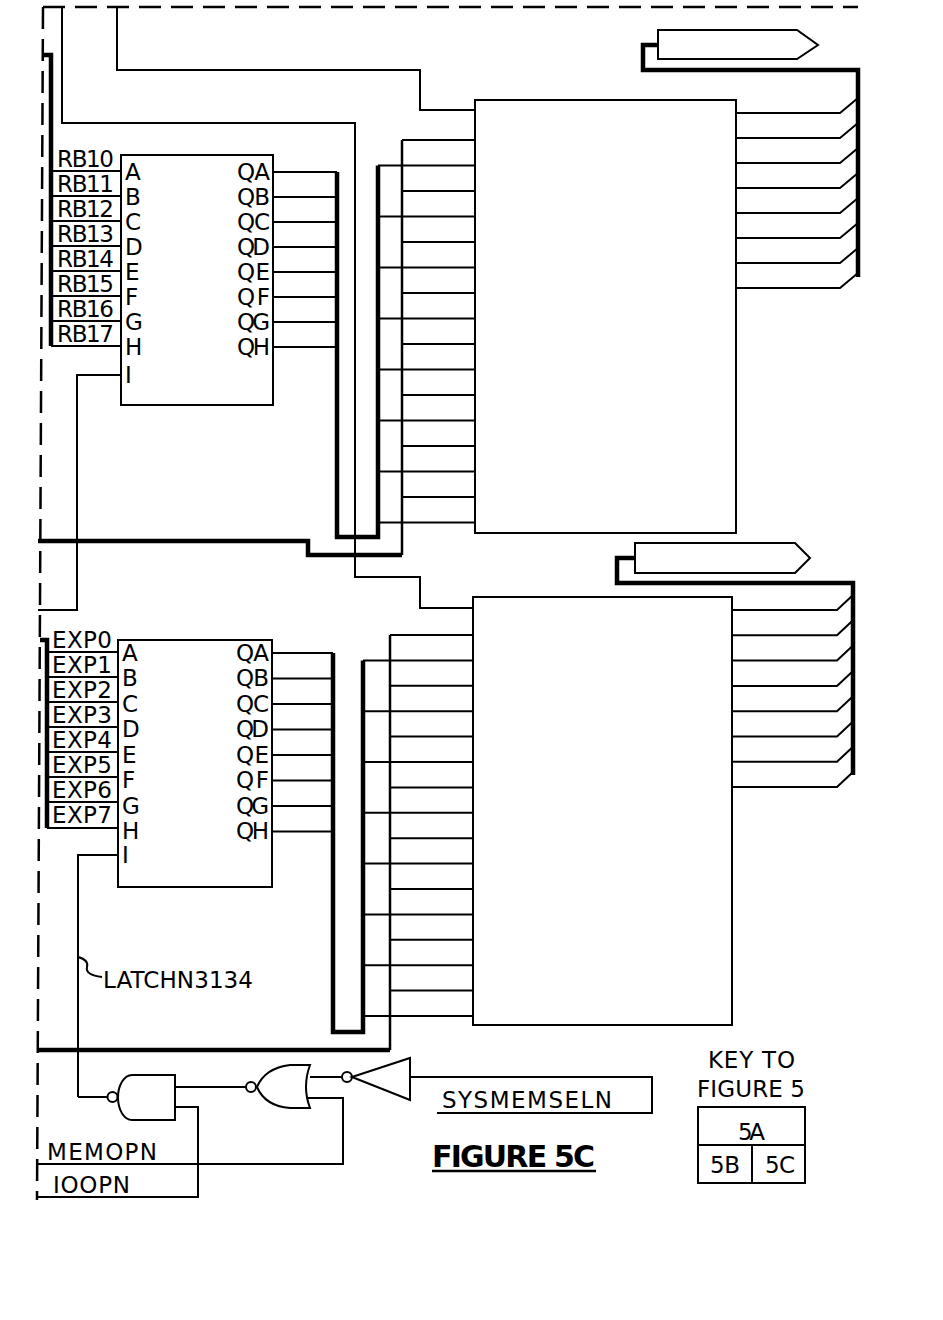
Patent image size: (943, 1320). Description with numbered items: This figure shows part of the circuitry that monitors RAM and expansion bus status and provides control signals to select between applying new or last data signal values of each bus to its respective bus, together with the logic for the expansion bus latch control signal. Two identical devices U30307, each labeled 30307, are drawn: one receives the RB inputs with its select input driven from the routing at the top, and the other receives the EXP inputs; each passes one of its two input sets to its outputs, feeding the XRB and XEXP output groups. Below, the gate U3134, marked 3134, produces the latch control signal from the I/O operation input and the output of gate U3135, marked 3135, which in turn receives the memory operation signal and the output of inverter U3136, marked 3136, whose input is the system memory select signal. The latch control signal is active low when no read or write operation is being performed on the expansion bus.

The 2:1 multiplexer U30307 is at (610, 529).
The 2:1 multiplexer 30307 is at (610, 529).
The NAND gate U3134 is at (190, 1124).
The NAND gate 3134 is at (190, 1124).
The NOR gate U3135 is at (294, 1062).
The NOR gate 3135 is at (291, 1068).
The inverter U3136 is at (497, 1072).
The inverter 3136 is at (416, 1054).